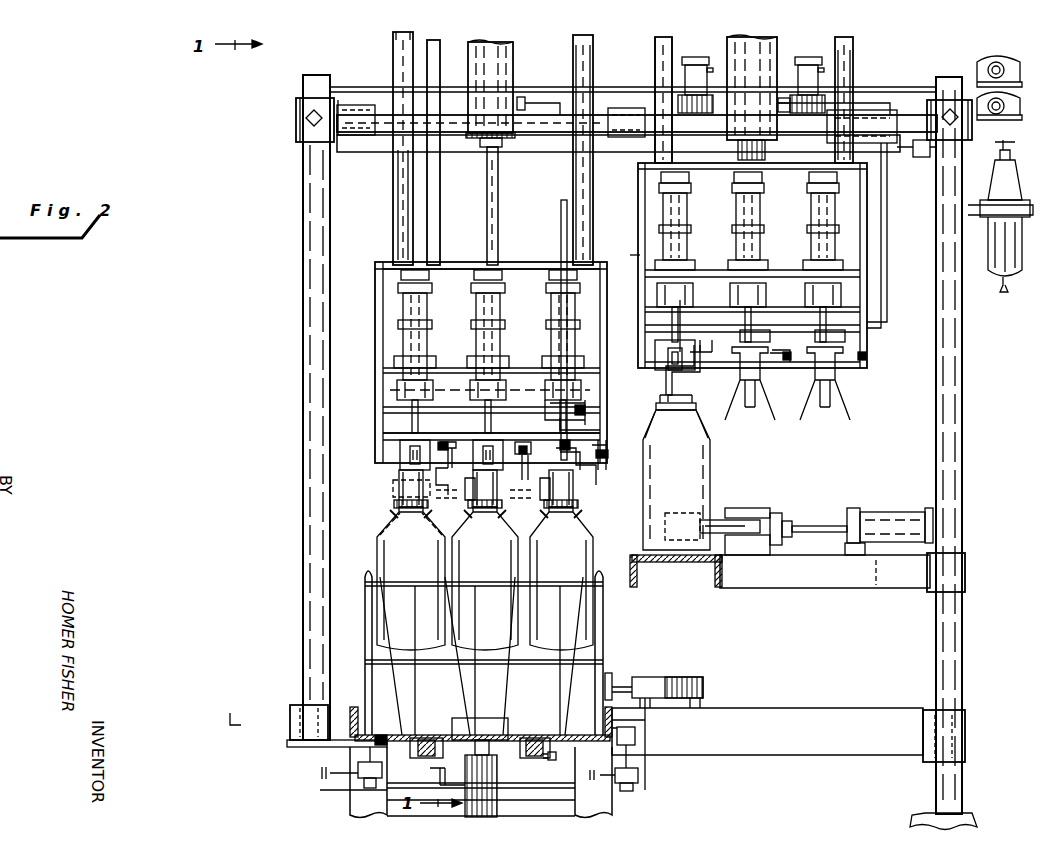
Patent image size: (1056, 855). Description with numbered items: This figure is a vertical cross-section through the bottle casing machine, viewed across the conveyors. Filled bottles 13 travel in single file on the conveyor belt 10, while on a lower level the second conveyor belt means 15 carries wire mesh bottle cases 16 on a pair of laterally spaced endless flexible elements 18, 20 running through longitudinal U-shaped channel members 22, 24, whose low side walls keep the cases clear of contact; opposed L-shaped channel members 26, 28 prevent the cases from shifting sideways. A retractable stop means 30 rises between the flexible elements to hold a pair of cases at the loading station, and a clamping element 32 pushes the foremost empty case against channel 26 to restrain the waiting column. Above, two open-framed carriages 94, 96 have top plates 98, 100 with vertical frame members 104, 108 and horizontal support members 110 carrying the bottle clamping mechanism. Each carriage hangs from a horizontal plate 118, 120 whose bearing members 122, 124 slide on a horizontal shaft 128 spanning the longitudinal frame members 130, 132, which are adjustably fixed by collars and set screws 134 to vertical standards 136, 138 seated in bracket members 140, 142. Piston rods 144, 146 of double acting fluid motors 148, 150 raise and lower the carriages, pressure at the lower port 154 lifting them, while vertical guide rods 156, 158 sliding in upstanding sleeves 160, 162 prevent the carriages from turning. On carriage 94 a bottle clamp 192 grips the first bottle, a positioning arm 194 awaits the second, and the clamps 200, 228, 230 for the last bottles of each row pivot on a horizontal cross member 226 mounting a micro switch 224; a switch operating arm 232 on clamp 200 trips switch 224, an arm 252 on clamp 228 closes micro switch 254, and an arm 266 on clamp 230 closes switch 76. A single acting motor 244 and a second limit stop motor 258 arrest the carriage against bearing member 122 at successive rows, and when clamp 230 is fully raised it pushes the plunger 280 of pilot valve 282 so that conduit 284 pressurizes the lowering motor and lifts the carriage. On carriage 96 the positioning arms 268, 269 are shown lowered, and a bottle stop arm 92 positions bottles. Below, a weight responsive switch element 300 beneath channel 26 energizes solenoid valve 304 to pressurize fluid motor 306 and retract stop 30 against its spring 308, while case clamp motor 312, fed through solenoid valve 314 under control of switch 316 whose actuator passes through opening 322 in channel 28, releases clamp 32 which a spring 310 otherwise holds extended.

The conveyor belt 10 is at (678, 566).
The bottles 13 is at (708, 456).
The second conveyor belt means 15 is at (405, 745).
The bottle cases 16 is at (600, 594).
The endless flexible element 18 is at (428, 758).
The endless flexible element 20 is at (533, 738).
The U-shaped channel member 22 is at (437, 738).
The U-shaped channel member 24 is at (560, 760).
The L-shaped channel member 26 is at (352, 710).
The L-shaped channel member 28 is at (605, 720).
The retractable stop means 30 is at (489, 710).
The clamping element 32 is at (618, 678).
The switch 76 is at (605, 450).
The bottle stop arm 92 is at (742, 510).
The carriage 94 is at (472, 240).
The carriage 96 is at (882, 253).
The top plate 98 is at (542, 262).
The top plate 100 is at (705, 175).
The vertical frame member 104 is at (378, 341).
The vertical frame member 108 is at (619, 252).
The horizontal support member 110 is at (525, 368).
The horizontal plate 118 is at (472, 152).
The horizontal plate 120 is at (808, 146).
The bearing member 122 is at (356, 116).
The bearing member 124 is at (908, 152).
The horizontal shaft 128 is at (470, 110).
The horizontal frame member 130 is at (339, 100).
The horizontal frame member 132 is at (928, 105).
The collars and set screws 134 is at (299, 118).
The vertical standard 136 is at (303, 550).
The vertical standard 138 is at (962, 437).
The bracket member 140 is at (291, 712).
The bracket member 142 is at (955, 745).
The piston rod 144 is at (498, 203).
The piston rod 146 is at (765, 175).
The double acting fluid motor 148 is at (507, 58).
The double acting fluid motor 150 is at (791, 90).
The lower port 154 is at (521, 97).
The vertical guide rod 156 is at (394, 186).
The vertical guide rod 158 is at (586, 60).
The upstanding sleeve 160 is at (395, 55).
The upstanding sleeve 162 is at (586, 78).
The bottle clamp 192 is at (388, 516).
The positioning arm 194 is at (604, 422).
The bottle clamp 200 is at (398, 478).
The micro switch 224 is at (452, 445).
The horizontal cross member 226 is at (527, 440).
The bottle clamp 228 is at (482, 486).
The bottle clamp 230 is at (536, 467).
The switch operating arm 232 is at (470, 486).
The single acting motor 244 is at (808, 57).
The arm 252 is at (550, 494).
The micro switch 254 is at (533, 451).
The limit stop motor 258 is at (700, 52).
The arm 266 is at (574, 484).
The positioning arm 268 is at (742, 392).
The positioning arm 269 is at (812, 390).
The plunger 280 is at (602, 432).
The pilot valve 282 is at (815, 332).
The conduit 284 is at (567, 228).
The weight responsive switch element 300 is at (380, 735).
The solenoid valve 304 is at (358, 774).
The fluid motor 306 is at (498, 775).
The spring 308 is at (500, 804).
The spring 310 is at (500, 785).
The case clamp motor 312 is at (668, 677).
The solenoid valve 314 is at (636, 787).
The switch 316 is at (635, 736).
The opening 322 is at (646, 721).